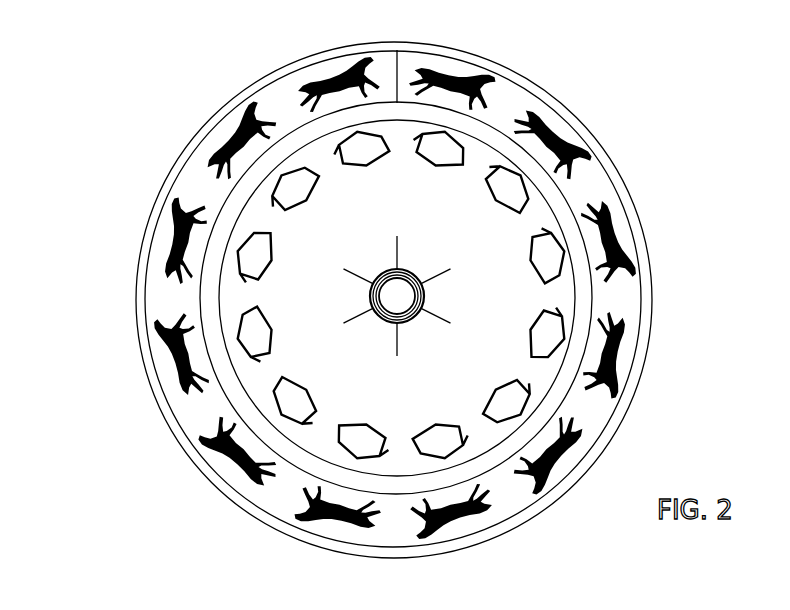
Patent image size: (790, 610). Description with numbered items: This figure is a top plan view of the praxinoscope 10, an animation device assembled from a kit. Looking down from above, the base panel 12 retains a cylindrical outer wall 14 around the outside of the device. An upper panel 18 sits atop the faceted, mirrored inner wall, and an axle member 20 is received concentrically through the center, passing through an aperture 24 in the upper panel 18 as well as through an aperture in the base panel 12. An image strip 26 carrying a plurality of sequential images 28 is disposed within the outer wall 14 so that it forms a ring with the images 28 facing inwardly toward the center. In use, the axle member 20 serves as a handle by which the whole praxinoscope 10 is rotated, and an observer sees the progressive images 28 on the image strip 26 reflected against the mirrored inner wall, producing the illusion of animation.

The praxinoscope 10 is at (342, 279).
The base panel 12 is at (500, 140).
The cylindrical outer wall 14 is at (138, 258).
The upper panel 18 is at (253, 375).
The axle member 20 is at (384, 272).
The aperture 24 is at (371, 298).
The image strip 26 is at (168, 205).
The sequential images 28 is at (230, 140).